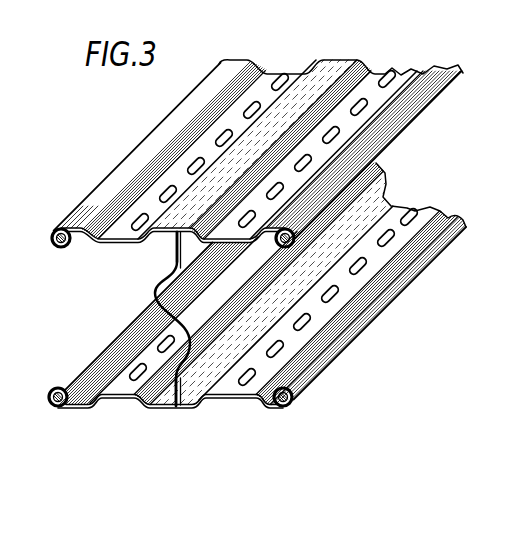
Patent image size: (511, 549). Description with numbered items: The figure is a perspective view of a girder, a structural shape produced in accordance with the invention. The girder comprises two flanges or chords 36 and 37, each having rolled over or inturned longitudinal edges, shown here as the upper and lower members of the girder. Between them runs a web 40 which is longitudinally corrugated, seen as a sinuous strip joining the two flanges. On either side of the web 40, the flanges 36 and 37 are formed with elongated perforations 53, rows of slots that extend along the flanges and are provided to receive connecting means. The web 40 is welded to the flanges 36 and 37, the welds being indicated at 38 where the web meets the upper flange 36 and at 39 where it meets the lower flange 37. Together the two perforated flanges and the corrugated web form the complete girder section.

The flange or chord 36 is at (74, 219).
The flange or chord 37 is at (69, 379).
The weld 38 is at (172, 245).
The weld 39 is at (185, 406).
The web 40 is at (153, 286).
The elongated perforations 53 is at (386, 79).